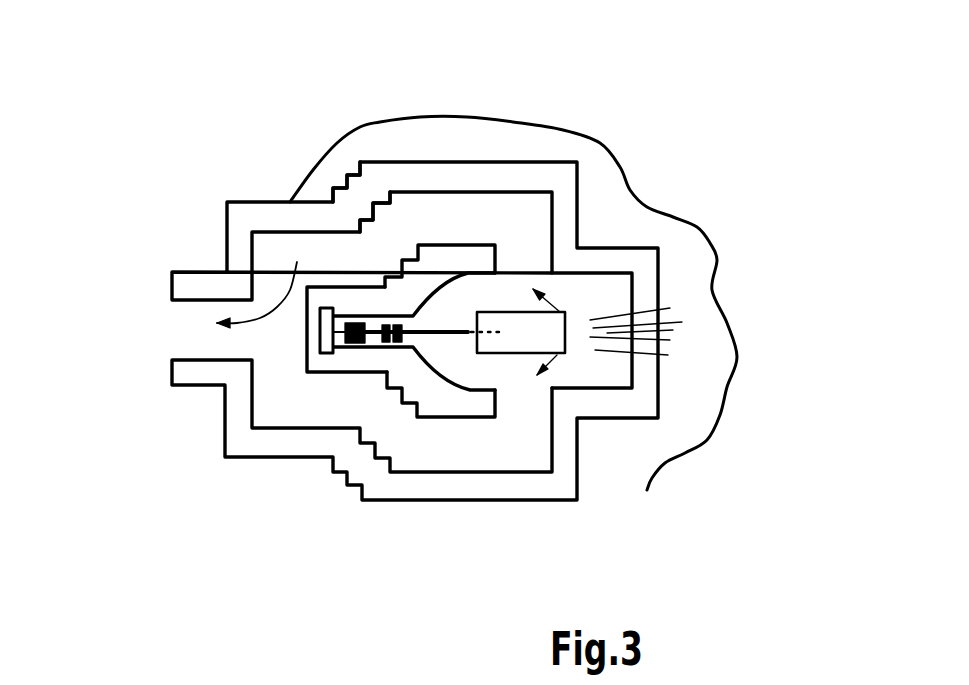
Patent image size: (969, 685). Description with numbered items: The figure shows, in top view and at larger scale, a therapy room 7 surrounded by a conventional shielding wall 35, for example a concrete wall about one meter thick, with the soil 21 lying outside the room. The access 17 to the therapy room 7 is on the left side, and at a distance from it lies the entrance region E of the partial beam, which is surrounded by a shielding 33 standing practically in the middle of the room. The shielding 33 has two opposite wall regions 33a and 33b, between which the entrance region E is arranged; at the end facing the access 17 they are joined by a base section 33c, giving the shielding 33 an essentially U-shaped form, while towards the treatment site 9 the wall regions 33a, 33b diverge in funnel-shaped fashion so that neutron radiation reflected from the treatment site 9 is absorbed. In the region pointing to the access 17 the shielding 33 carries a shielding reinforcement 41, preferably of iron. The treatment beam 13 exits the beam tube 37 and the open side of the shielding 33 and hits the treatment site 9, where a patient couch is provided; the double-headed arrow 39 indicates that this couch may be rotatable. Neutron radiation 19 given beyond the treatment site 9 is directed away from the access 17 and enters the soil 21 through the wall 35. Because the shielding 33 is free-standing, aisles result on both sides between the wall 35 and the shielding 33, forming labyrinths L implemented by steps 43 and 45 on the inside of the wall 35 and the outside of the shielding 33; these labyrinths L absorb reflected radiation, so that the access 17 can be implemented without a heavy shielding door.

The therapy room 7 is at (650, 247).
The treatment site 9 is at (553, 338).
The treatment beam 13 is at (495, 338).
The access 17 is at (340, 408).
The neutron radiation 19 is at (643, 327).
The soil 21 is at (710, 380).
The shielding 33 is at (432, 288).
The wall region 33a is at (373, 307).
The wall region 33b is at (372, 365).
The base section 33c is at (322, 295).
The shielding wall 35 is at (645, 290).
The beam tube 37 is at (437, 330).
The double-headed arrow 39 is at (557, 293).
The shielding reinforcement 41 is at (320, 347).
The step 43 is at (378, 210).
The step 45 is at (415, 242).
The entrance region E is at (367, 283).
The labyrinth L is at (500, 233).